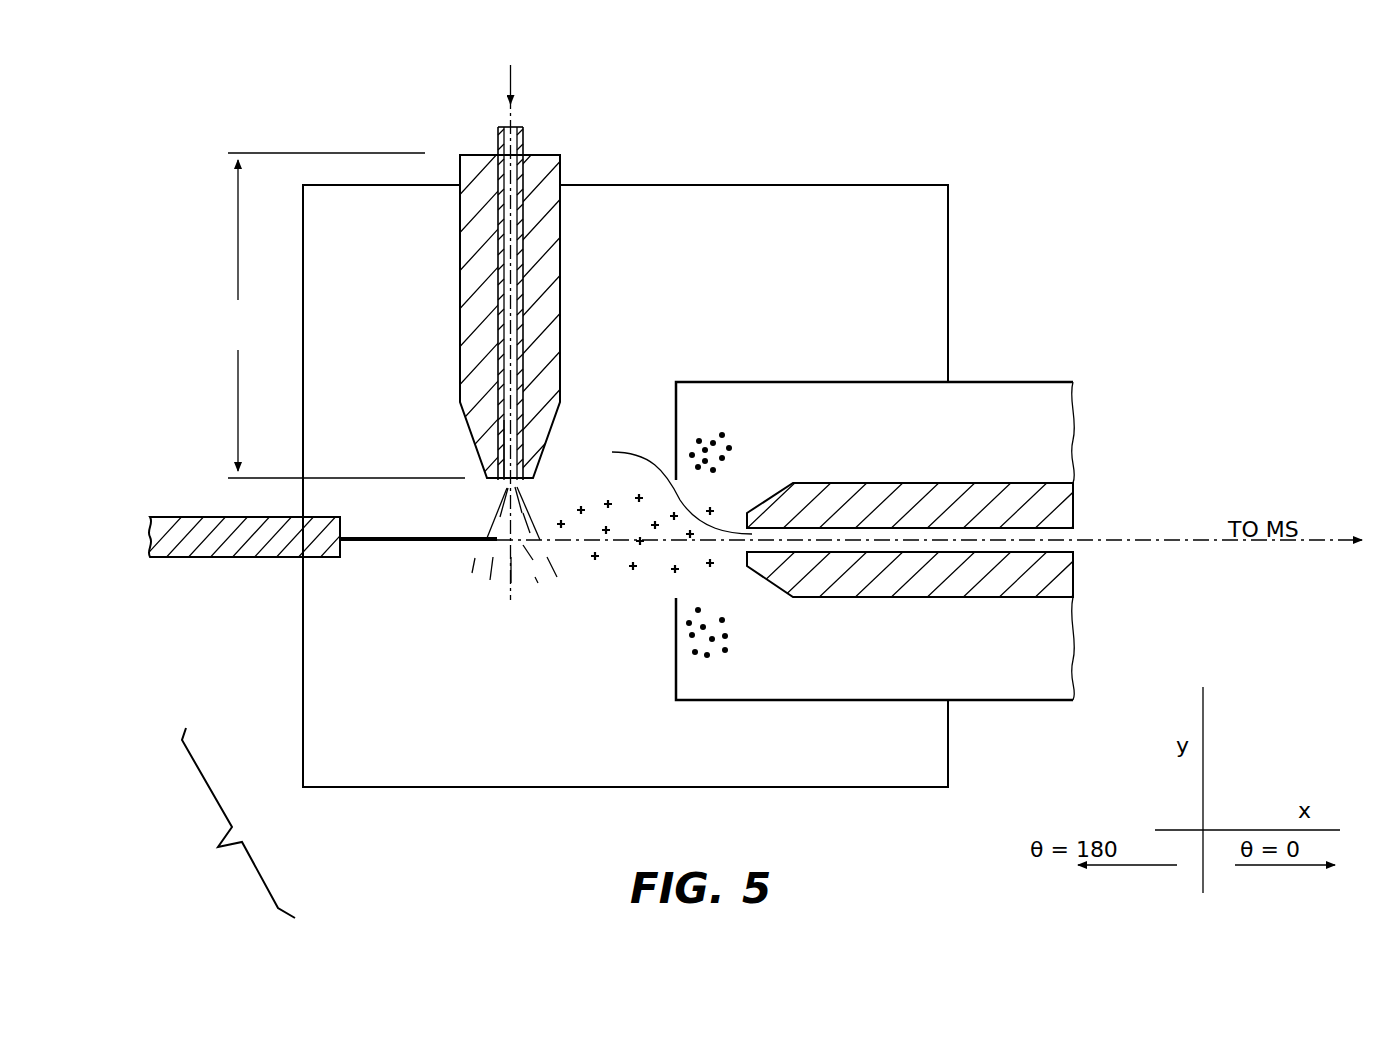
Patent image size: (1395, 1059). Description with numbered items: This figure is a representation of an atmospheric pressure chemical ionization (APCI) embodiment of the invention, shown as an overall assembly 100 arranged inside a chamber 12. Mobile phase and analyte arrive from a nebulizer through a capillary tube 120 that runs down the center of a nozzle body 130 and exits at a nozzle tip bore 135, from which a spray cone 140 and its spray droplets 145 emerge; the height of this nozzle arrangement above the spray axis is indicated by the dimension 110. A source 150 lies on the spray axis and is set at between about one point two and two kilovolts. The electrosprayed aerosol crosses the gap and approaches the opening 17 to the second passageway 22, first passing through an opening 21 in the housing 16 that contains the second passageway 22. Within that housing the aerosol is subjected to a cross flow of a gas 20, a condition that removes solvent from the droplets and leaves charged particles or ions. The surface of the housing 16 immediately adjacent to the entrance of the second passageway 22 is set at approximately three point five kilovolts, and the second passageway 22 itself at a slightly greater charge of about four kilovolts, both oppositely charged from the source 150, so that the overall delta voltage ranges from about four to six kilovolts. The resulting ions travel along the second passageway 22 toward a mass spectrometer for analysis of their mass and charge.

The chamber 12 is at (303, 787).
The housing 16 is at (686, 380).
The opening 17 is at (661, 489).
The gas 20 is at (758, 447).
The opening in the housing 21 is at (675, 585).
The second passageway 22 is at (1015, 533).
The ion source assembly 100 is at (198, 892).
The nozzle height dimension 110 is at (342, 315).
The nebulizer capillary tube 120 is at (523, 140).
The nozzle body 130 is at (475, 305).
The nozzle tip bore 135 is at (507, 430).
The spray cone 140 is at (495, 512).
The spray droplets 145 is at (555, 608).
The source 150 is at (380, 560).